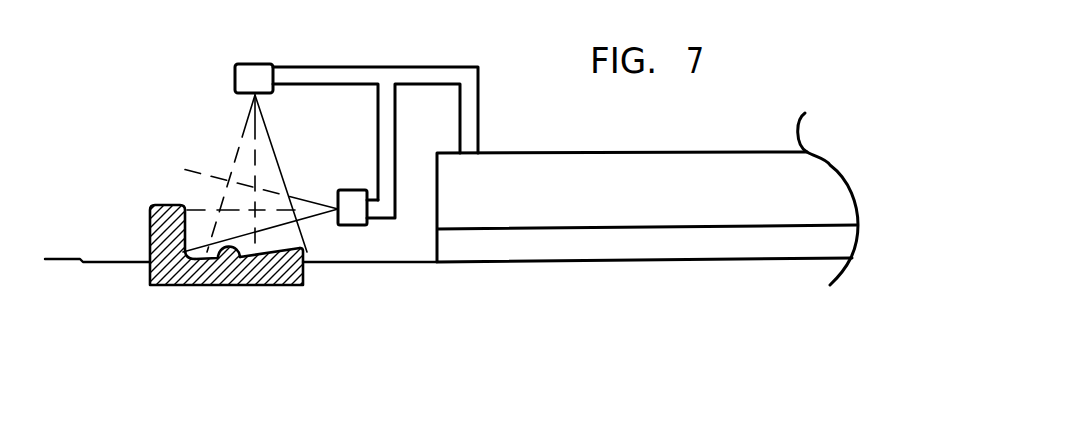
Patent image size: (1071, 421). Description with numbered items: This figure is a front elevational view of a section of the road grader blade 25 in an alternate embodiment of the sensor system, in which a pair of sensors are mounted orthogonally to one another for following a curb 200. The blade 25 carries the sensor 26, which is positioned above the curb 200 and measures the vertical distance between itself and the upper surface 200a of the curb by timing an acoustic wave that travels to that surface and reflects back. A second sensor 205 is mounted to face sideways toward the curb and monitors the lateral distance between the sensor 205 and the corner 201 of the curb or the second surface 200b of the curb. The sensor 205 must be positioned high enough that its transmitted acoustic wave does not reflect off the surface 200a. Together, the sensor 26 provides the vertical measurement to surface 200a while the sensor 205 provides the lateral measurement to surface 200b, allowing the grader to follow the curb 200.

The road grader blade 25 is at (518, 265).
The sensor 26 is at (255, 64).
The curb 200 is at (222, 250).
The surface 200a is at (207, 286).
The second surface 200b is at (188, 221).
The corner 201 is at (307, 249).
The sensor 205 is at (352, 229).